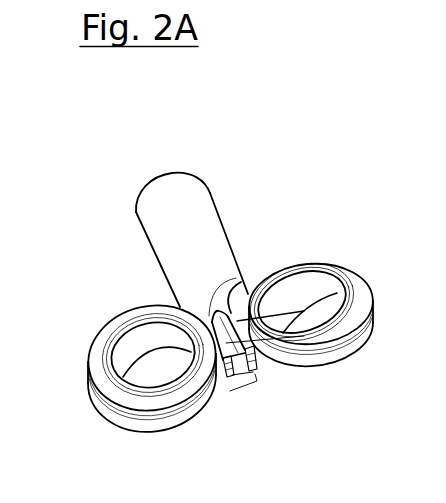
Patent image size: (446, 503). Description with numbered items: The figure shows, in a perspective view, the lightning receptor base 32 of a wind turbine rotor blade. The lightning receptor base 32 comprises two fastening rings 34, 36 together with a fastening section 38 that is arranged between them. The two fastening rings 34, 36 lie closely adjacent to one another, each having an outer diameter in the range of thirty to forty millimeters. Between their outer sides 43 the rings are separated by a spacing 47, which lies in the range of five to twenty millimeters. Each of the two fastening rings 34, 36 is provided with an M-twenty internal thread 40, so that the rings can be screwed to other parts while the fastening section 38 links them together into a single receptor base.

The lightning receptor base 32 is at (293, 165).
The fastening ring 34 is at (353, 283).
The fastening ring 36 is at (110, 398).
The fastening section 38 is at (160, 203).
The internal thread 40 is at (303, 287).
The outer side 43 is at (187, 413).
The spacing 47 is at (246, 392).